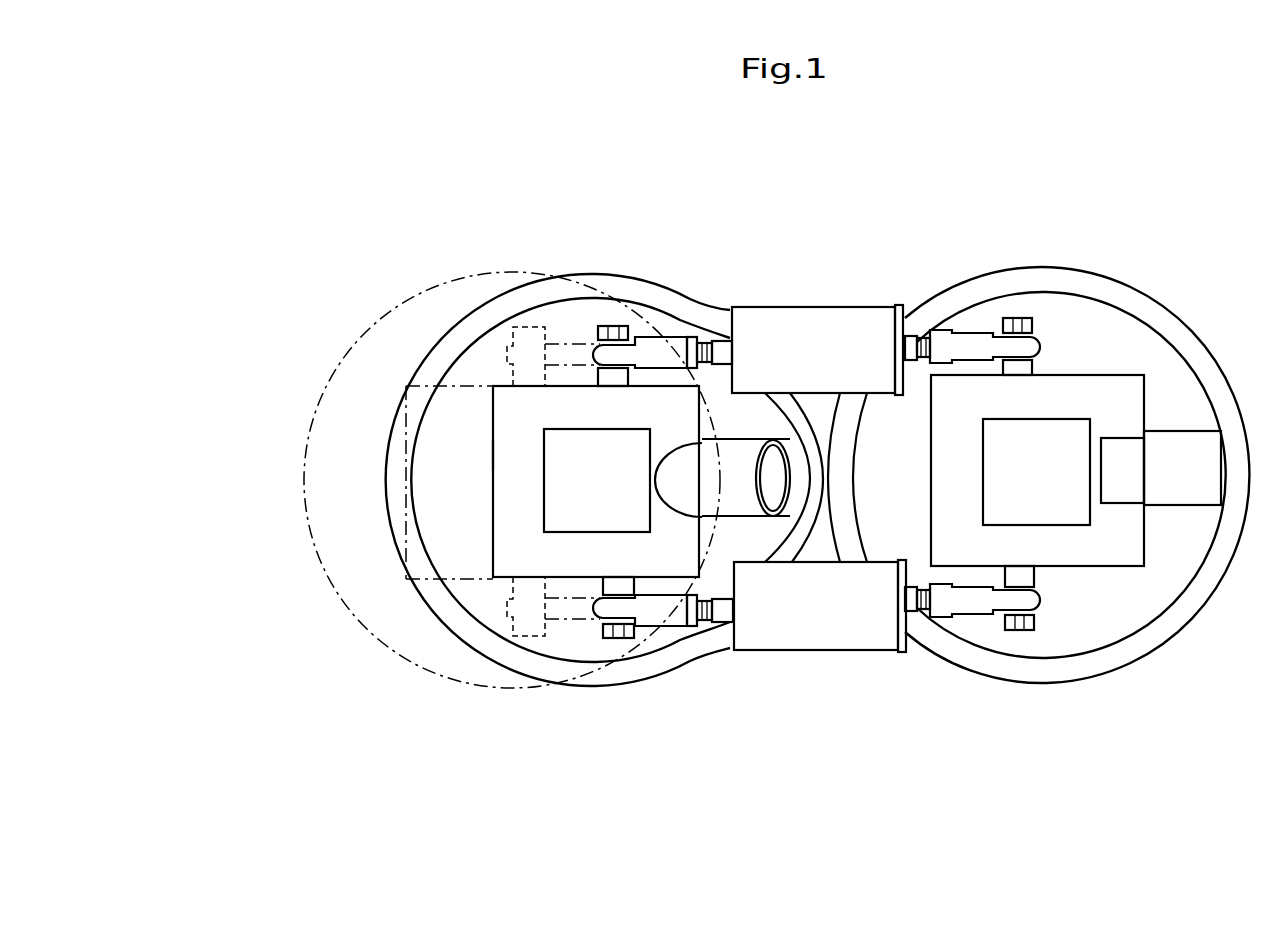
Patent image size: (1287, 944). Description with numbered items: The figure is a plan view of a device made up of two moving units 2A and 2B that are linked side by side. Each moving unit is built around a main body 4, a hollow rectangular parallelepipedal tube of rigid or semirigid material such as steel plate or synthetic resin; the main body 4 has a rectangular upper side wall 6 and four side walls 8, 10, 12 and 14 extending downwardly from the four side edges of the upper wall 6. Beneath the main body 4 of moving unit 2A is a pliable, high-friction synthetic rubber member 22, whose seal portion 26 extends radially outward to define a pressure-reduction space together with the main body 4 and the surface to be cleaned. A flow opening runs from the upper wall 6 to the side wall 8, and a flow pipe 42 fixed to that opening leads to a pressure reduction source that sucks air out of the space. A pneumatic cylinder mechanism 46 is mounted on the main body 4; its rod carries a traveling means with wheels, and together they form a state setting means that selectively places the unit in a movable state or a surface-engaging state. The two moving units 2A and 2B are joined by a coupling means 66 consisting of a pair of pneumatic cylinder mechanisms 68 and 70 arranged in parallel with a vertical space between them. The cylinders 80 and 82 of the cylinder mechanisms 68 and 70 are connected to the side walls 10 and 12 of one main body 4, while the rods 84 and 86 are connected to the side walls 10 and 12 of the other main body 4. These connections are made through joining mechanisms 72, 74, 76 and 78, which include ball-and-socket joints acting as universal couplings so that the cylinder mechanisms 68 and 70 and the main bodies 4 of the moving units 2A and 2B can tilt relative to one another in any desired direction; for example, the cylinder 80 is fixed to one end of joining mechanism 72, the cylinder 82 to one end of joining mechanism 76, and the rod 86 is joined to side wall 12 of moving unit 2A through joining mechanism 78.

The moving unit 2A is at (317, 556).
The moving unit 2B is at (1056, 698).
The main body 4 is at (563, 481).
The upper side wall 6 is at (503, 447).
The side wall 8 is at (703, 413).
The side wall 10 is at (567, 580).
The side wall 12 is at (565, 385).
The side wall 14 is at (497, 512).
The member 22 is at (697, 673).
The seal portion 26 is at (415, 598).
The flow pipe 42 is at (790, 457).
The pneumatic cylinder mechanism 46 is at (597, 460).
The coupling means 66 is at (822, 262).
The pneumatic cylinder mechanism 68 is at (820, 665).
The pneumatic cylinder mechanism 70 is at (817, 304).
The joining mechanism 72 is at (984, 615).
The joining mechanism 74 is at (661, 622).
The joining mechanism 76 is at (960, 330).
The joining mechanism 78 is at (672, 337).
The cylinder 80 is at (887, 638).
The cylinder 82 is at (848, 308).
The rod 84 is at (727, 622).
The rod 86 is at (722, 340).